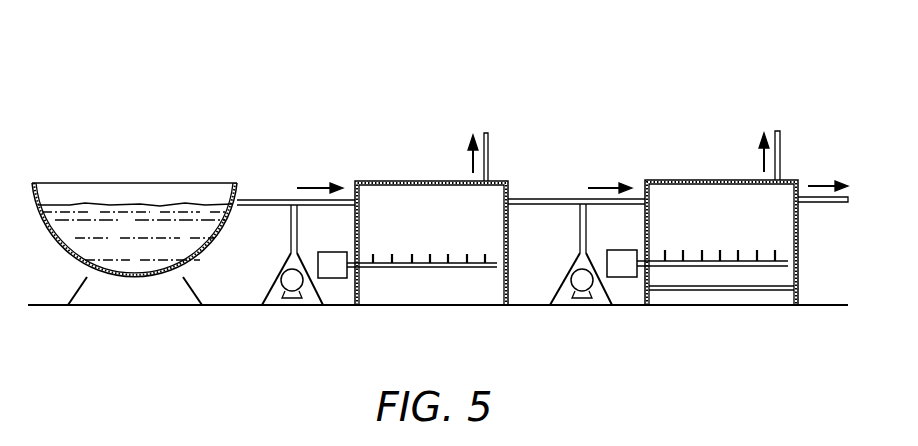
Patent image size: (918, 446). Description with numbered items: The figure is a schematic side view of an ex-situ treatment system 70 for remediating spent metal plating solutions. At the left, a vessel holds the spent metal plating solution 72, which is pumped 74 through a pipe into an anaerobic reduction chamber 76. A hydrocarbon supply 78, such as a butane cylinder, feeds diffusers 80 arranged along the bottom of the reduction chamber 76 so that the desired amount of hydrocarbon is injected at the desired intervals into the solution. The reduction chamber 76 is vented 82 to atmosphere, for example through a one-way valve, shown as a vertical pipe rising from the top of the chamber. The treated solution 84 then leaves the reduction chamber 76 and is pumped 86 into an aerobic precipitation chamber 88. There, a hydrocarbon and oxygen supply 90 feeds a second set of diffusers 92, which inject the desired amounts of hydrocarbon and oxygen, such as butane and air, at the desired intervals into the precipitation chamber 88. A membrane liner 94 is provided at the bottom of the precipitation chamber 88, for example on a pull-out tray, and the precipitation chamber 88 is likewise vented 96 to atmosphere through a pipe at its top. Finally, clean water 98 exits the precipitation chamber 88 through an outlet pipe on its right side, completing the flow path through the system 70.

The system 70 is at (257, 93).
The spent metal plating solution 72 is at (121, 213).
The pump 74 is at (282, 278).
The anaerobic reduction chamber 76 is at (424, 195).
The hydrocarbon supply 78 is at (333, 270).
The diffusers 80 is at (470, 259).
The vent 82 is at (489, 157).
The solution 84 is at (603, 195).
The pump 86 is at (567, 278).
The aerobic precipitation chamber 88 is at (720, 200).
The hydrocarbon and oxygen supply 90 is at (622, 270).
The diffusers 92 is at (667, 250).
The membrane liner 94 is at (747, 292).
The vent 96 is at (781, 157).
The clean water 98 is at (822, 204).